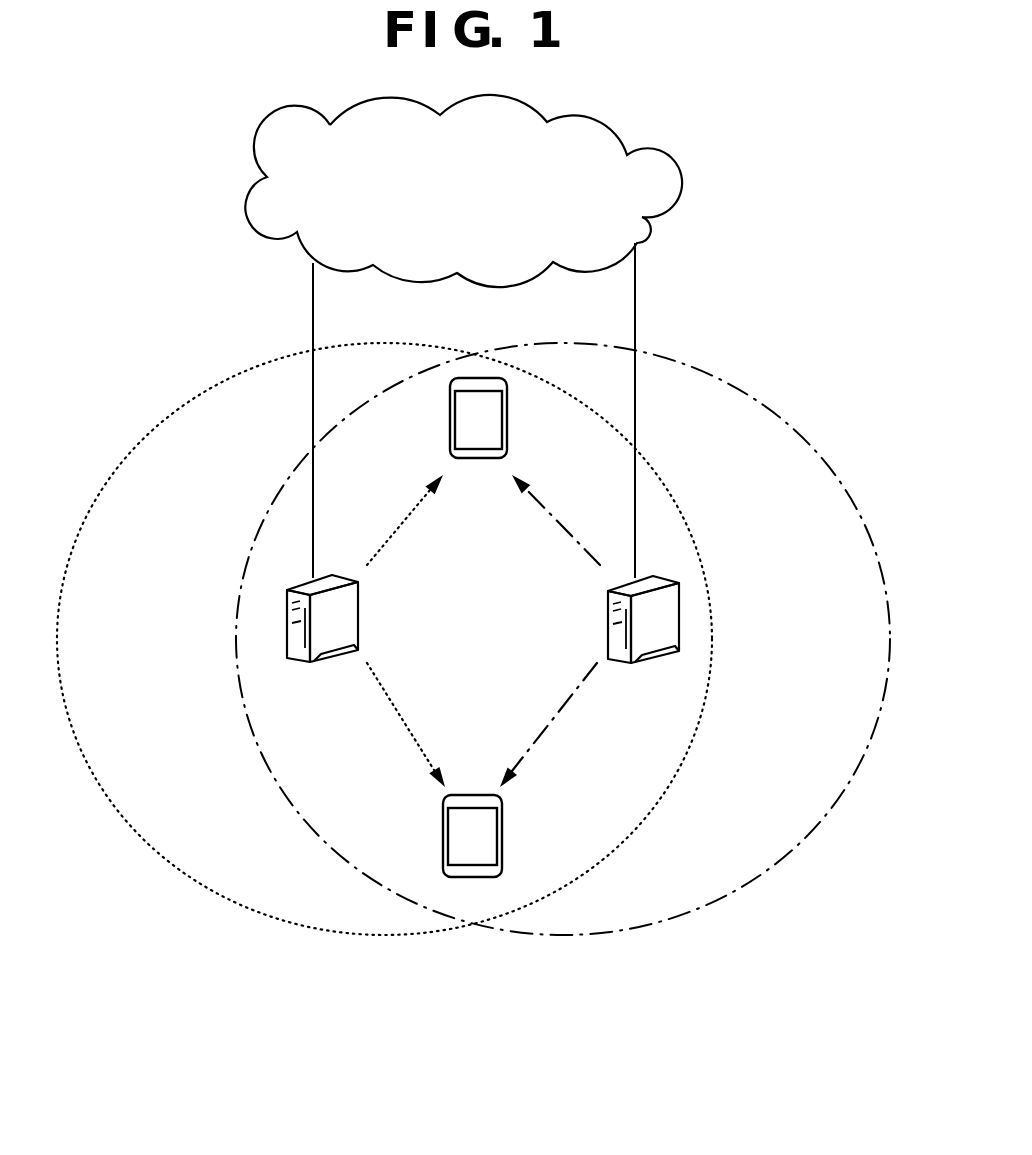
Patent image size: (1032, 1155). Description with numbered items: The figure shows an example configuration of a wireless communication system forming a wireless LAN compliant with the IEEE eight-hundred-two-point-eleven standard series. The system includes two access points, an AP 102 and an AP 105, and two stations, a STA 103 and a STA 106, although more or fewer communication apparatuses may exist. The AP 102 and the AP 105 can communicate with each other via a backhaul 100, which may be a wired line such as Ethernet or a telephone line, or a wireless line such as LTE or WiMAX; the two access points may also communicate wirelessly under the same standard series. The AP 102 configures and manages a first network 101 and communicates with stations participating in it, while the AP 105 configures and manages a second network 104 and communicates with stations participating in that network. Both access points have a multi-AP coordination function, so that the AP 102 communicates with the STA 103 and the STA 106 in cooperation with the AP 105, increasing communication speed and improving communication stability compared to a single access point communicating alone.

The backhaul 100 is at (245, 202).
The first network 101 is at (275, 920).
The AP 102 is at (317, 663).
The STA 103 is at (450, 430).
The second network 104 is at (658, 927).
The AP 105 is at (637, 663).
The STA 106 is at (442, 847).